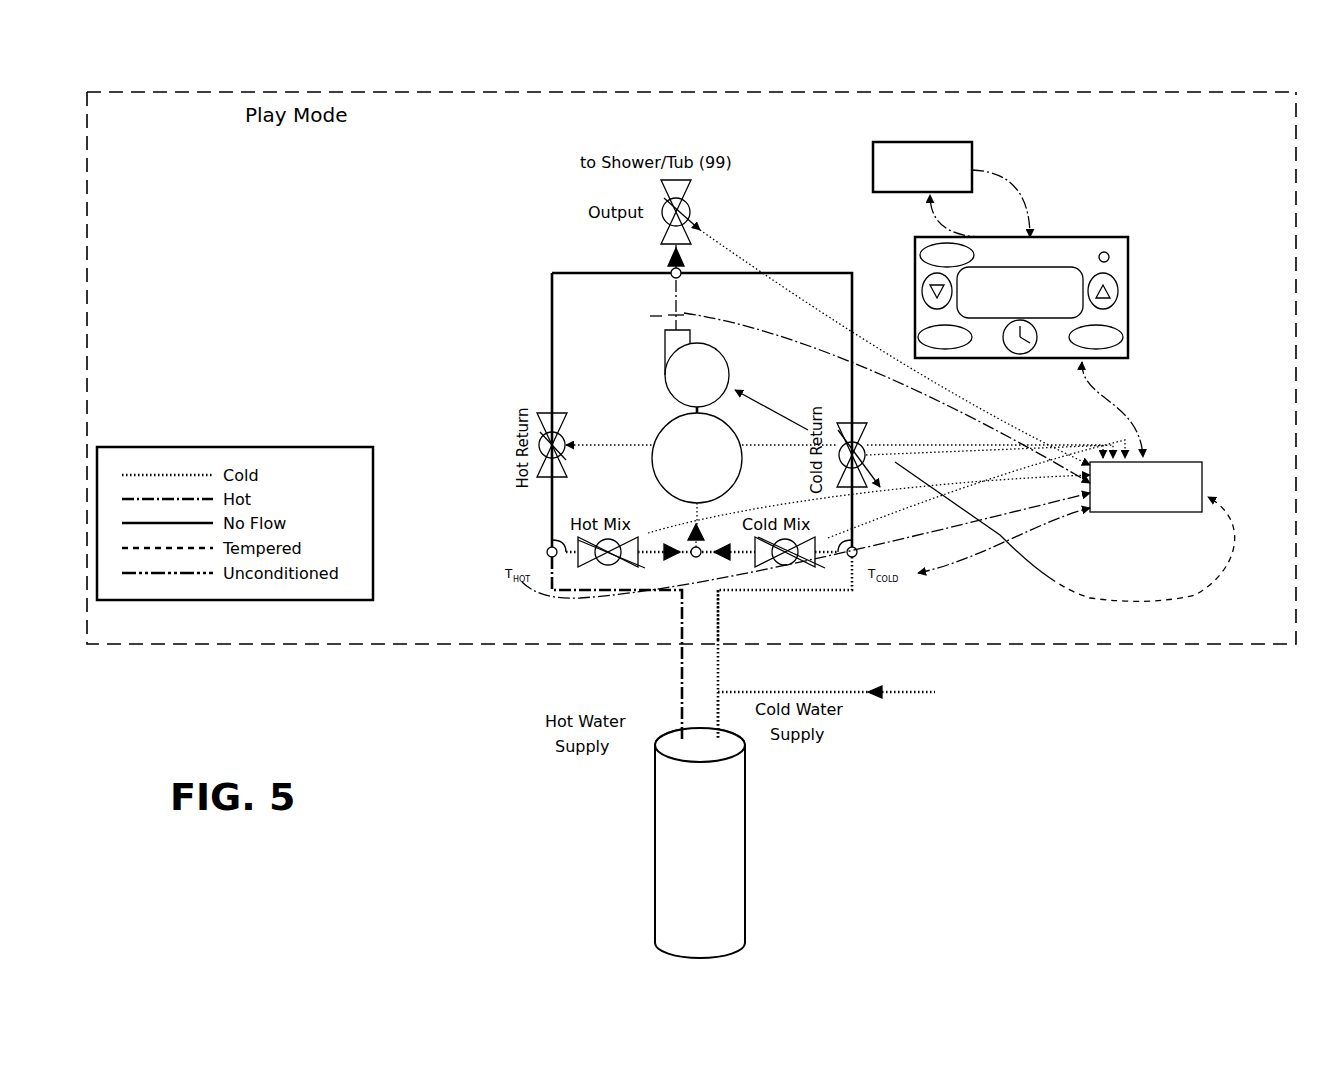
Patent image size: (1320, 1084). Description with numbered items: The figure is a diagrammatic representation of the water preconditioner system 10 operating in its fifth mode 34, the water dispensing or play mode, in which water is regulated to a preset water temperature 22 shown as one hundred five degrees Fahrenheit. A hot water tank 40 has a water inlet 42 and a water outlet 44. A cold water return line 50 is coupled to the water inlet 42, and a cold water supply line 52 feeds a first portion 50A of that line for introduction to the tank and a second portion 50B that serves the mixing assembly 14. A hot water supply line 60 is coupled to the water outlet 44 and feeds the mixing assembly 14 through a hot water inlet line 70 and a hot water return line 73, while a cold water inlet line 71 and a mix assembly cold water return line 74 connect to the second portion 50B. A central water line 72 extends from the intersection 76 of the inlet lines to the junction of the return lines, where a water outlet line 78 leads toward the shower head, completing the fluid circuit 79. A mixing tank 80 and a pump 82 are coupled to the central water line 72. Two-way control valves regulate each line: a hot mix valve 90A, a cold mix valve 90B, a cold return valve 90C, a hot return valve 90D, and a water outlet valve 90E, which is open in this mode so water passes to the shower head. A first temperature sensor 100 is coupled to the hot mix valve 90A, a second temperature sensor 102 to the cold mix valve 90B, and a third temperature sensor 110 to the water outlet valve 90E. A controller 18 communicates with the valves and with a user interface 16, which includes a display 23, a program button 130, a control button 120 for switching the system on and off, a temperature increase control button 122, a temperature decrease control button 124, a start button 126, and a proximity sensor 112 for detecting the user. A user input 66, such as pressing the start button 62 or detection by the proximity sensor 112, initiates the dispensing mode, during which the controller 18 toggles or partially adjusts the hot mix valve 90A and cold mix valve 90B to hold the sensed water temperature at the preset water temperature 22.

The water preconditioner system 10 is at (702, 343).
The fifth mode 34 is at (1243, 75).
The mixing assembly 14 is at (612, 384).
The user input 66 is at (1051, 274).
The hot water return line 73 is at (552, 278).
The fluid circuit 79 is at (530, 307).
The mix assembly cold water return line 74 is at (808, 272).
The central water line 72 is at (685, 298).
The water outlet line 78 is at (665, 258).
The third temperature sensor 110 is at (646, 211).
The water outlet valve 90E is at (650, 186).
The pump 82 is at (665, 362).
The mixing tank 80 is at (660, 440).
The hot return valve 90D is at (537, 420).
The cold return valve 90C is at (866, 445).
The hot mix valve 90A is at (560, 572).
The cold mix valve 90B is at (790, 567).
The first temperature sensor 100 is at (578, 540).
The hot water inlet line 70 is at (547, 543).
The cold water inlet line 71 is at (862, 540).
The intersection 76 is at (694, 560).
The second temperature sensor 102 is at (740, 595).
The second portion of the cold water return line 50B is at (740, 605).
The hot water supply line 60 is at (680, 682).
The cold water return line 50 is at (720, 655).
The cold water supply line 52 is at (820, 692).
The first portion of the cold water return line 50A is at (720, 715).
The water outlet 44 is at (665, 748).
The water inlet 42 is at (740, 748).
The hot water tank 40 is at (704, 843).
The program button 130 is at (918, 255).
The display 23 is at (1029, 250).
The preset water temperature 22 is at (1058, 272).
The proximity sensor 112 is at (1104, 250).
The temperature increase control button 122 is at (1115, 283).
The user interface 16 is at (1033, 291).
The control button 120 is at (1122, 337).
The temperature decrease control button 124 is at (920, 298).
The start button 62 is at (947, 350).
The start button 126 is at (1022, 355).
The controller 18 is at (1180, 460).